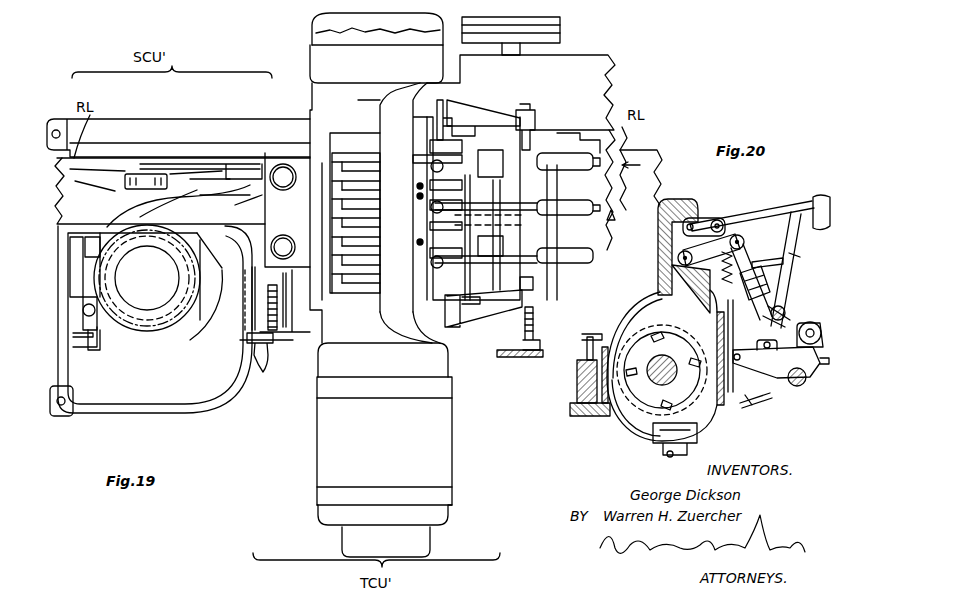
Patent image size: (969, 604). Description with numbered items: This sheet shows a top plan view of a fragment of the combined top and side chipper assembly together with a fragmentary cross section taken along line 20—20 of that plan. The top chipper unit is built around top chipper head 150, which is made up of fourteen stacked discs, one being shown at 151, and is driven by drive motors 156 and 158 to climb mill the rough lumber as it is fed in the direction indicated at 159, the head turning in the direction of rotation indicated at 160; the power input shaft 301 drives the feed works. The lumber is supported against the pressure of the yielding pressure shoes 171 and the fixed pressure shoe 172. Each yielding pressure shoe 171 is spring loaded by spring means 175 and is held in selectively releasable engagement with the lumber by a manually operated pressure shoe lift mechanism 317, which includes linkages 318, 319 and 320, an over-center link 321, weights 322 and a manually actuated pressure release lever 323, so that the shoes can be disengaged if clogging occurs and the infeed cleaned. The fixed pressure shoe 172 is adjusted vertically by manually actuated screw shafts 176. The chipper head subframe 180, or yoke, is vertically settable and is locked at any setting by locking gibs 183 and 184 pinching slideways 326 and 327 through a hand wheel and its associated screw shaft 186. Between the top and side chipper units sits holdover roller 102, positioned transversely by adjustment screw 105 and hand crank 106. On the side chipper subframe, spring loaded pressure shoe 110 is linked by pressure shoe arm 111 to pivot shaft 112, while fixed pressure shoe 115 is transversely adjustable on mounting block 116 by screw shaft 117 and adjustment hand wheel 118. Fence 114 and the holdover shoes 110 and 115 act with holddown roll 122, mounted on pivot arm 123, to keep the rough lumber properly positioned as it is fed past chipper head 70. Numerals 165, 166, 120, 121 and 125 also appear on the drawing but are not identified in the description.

In FIG. 19, the upper cap unit 165 is at (330, 7).
In FIG. 19, the drive motor 156 is at (310, 43).
In FIG. 19, the stacked disc 151 is at (360, 193).
In FIG. 20, the stacked disc 151 is at (650, 393).
In FIG. 19, the slideway 326 is at (441, 100).
In FIG. 19, the locking gib 183 is at (480, 115).
In FIG. 19, the yielding pressure shoe 171 is at (520, 152).
In FIG. 20, the yielding pressure shoe 171 is at (727, 417).
In FIG. 19, the weight 322 is at (573, 170).
In FIG. 20, the weight 322 is at (818, 197).
In FIG. 19, the power input shaft 301 is at (522, 47).
In FIG. 19, the feed direction 159 is at (646, 150).
In FIG. 20, the feed direction 159 is at (767, 428).
In FIG. 19, the pressure shoe lift mechanism 317 is at (635, 187).
In FIG. 20, the pressure shoe lift mechanism 317 is at (768, 268).
In FIG. 19, the section line 20— 20 is at (603, 224).
In FIG. 19, the screw shaft 186 is at (530, 268).
In FIG. 19, the locking gib 184 is at (475, 306).
In FIG. 19, the pressure release lever 323 is at (512, 305).
In FIG. 20, the pressure release lever 323 is at (752, 209).
In FIG. 19, the slideway 327 is at (443, 330).
In FIG. 19, the drive motor 158 is at (327, 458).
In FIG. 19, the foot 166 is at (427, 537).
In FIG. 19, the fence 114 is at (103, 146).
In FIG. 19, the holddown roll 122 is at (130, 174).
In FIG. 19, the pivot arm 123 is at (190, 165).
In FIG. 19, the plate 125 is at (243, 182).
In FIG. 19, the fixed pressure shoe 115 is at (110, 197).
In FIG. 19, the screw shaft 117 is at (98, 208).
In FIG. 19, the mounting block 116 is at (118, 212).
In FIG. 19, the spring loaded pressure shoe 110 is at (200, 200).
In FIG. 19, the holdover roller 102 is at (237, 207).
In FIG. 19, the top chipper head 150 is at (324, 214).
In FIG. 19, the screw shaft 176 is at (283, 164).
In FIG. 20, the screw shaft 176 is at (575, 408).
In FIG. 19, the housing 120 is at (168, 330).
In FIG. 19, the chipper head 70 is at (193, 308).
In FIG. 19, the pressure shoe arm 111 is at (190, 333).
In FIG. 19, the pivot shaft 112 is at (98, 320).
In FIG. 19, the plate 121 is at (107, 343).
In FIG. 19, the adjustment hand wheel 118 is at (88, 360).
In FIG. 19, the adjustment screw 105 is at (260, 326).
In FIG. 19, the hand crank 106 is at (263, 373).
In FIG. 20, the direction of rotation 160 is at (690, 410).
In FIG. 20, the chipper head subframe 180 is at (686, 311).
In FIG. 20, the spring means 175 is at (734, 232).
In FIG. 20, the linkage 318 is at (728, 225).
In FIG. 20, the linkage 319 is at (784, 262).
In FIG. 20, the over-center link 321 is at (786, 311).
In FIG. 20, the linkage 320 is at (790, 380).
In FIG. 20, the fixed pressure shoe 172 is at (592, 416).